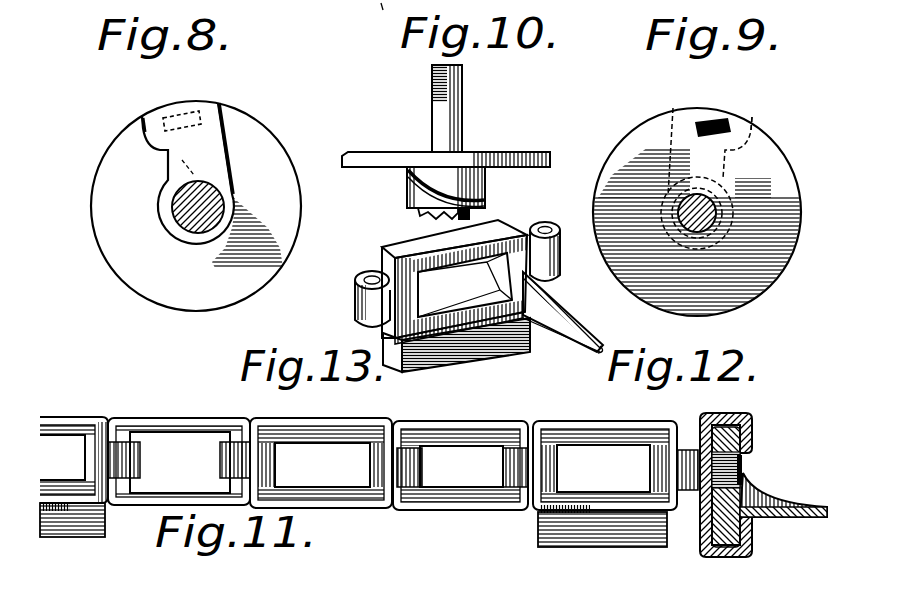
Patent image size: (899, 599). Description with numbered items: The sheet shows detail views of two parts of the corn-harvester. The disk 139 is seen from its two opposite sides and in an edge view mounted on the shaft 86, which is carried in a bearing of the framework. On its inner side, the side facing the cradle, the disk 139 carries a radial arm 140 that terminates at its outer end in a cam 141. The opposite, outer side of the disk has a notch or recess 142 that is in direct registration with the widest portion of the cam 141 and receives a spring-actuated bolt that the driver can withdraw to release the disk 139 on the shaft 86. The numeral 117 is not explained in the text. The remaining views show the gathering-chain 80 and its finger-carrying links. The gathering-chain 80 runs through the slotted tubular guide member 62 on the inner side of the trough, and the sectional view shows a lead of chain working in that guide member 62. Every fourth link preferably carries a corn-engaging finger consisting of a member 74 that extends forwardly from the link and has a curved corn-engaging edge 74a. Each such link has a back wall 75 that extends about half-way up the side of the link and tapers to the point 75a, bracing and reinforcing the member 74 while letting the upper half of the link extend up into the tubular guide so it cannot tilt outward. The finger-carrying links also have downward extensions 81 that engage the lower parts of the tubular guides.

In FIG. 12, the slotted tubular guide member 62 is at (752, 418).
In FIG. 13, the corn-engaging finger member 74 is at (459, 328).
In FIG. 11, the corn-engaging finger member 74 is at (65, 505).
In FIG. 12, the corn-engaging finger member 74 is at (815, 517).
In FIG. 13, the curved corn-engaging edge 74a is at (524, 352).
In FIG. 13, the back wall 75 is at (563, 322).
In FIG. 11, the back wall 75 is at (102, 470).
In FIG. 12, the back wall 75 is at (727, 470).
In FIG. 13, the point of back wall 75a is at (604, 350).
In FIG. 13, the gathering-chain 80 is at (457, 279).
In FIG. 11, the gathering-chain 80 is at (437, 495).
In FIG. 13, the downward extension 81 is at (452, 352).
In FIG. 11, the downward extension 81 is at (77, 418).
In FIG. 12, the downward extension 81 is at (727, 537).
In FIG. 8, the shaft 86 is at (180, 220).
In FIG. 10, the shaft 86 is at (420, 217).
In FIG. 9, the shaft 86 is at (710, 213).
In FIG. 10, the support 117 is at (365, 12).
In FIG. 8, the disk 139 is at (280, 160).
In FIG. 10, the disk 139 is at (537, 153).
In FIG. 9, the disk 139 is at (712, 213).
In FIG. 8, the radial arm 140 is at (225, 137).
In FIG. 10, the radial arm 140 is at (487, 187).
In FIG. 9, the radial arm 140 is at (662, 143).
In FIG. 8, the cam 141 is at (157, 117).
In FIG. 10, the cam 141 is at (448, 183).
In FIG. 9, the cam 141 is at (746, 128).
In FIG. 8, the notch or recess 142 is at (195, 109).
In FIG. 9, the notch or recess 142 is at (723, 103).